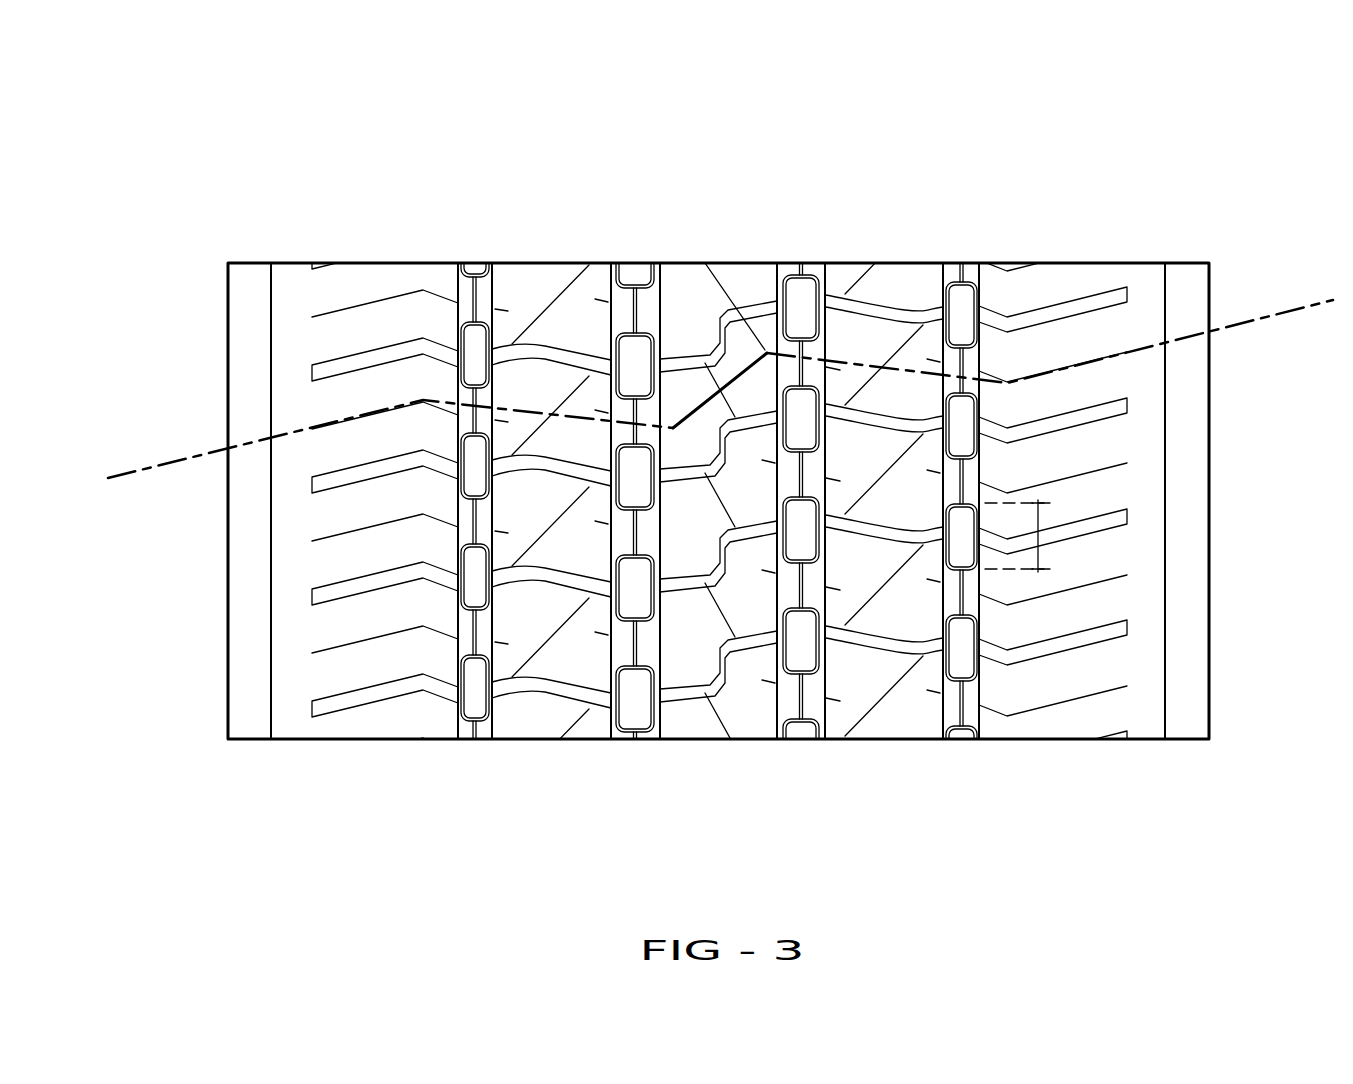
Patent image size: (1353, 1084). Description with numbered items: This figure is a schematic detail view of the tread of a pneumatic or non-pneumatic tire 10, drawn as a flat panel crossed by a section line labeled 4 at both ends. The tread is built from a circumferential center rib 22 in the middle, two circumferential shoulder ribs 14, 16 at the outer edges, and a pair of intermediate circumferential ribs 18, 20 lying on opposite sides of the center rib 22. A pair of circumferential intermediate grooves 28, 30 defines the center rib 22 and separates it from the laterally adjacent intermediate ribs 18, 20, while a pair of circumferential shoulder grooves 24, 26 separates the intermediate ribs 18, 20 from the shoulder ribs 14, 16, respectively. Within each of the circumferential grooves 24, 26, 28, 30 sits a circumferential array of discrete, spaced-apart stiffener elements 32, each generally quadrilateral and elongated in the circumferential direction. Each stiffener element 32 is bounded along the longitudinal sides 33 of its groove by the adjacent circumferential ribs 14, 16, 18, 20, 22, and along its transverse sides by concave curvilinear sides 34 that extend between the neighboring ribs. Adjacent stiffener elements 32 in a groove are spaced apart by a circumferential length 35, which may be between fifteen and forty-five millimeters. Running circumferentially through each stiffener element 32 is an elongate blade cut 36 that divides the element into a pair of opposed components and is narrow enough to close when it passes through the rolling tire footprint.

The tire 10 is at (186, 219).
The section line 4- 4 is at (108, 478).
The shoulder rib 14 is at (398, 254).
The shoulder rib 16 is at (1066, 254).
The intermediate rib 18 is at (536, 254).
The intermediate rib 20 is at (892, 254).
The center rib 22 is at (718, 254).
The shoulder groove 24 is at (470, 254).
The shoulder groove 26 is at (965, 254).
The intermediate groove 28 is at (637, 254).
The intermediate groove 30 is at (805, 254).
The stiffener element 32 is at (490, 402).
The longitudinal side 33 is at (472, 385).
The concave curvilinear side 34 is at (505, 486).
The circumferential length 35 is at (1045, 552).
The blade cut 36 is at (455, 643).